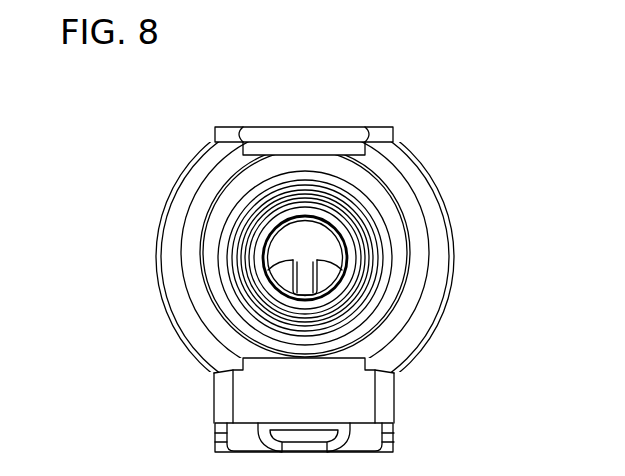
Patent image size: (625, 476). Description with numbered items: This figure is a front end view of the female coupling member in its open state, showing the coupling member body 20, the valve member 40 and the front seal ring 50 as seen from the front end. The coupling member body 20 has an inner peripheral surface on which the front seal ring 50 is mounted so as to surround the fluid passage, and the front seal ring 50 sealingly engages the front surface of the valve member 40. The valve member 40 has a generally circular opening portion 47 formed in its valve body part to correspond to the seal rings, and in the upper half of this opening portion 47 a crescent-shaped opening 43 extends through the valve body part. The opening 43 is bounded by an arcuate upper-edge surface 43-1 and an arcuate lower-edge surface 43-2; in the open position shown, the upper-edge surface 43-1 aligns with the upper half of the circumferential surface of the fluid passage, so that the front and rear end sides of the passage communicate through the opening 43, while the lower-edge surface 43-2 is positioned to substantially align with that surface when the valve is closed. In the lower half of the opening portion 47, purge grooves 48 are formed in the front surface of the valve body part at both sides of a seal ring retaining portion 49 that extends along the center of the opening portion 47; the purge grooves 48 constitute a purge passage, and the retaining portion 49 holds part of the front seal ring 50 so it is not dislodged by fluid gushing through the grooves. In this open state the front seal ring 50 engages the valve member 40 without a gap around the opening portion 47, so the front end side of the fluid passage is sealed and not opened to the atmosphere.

The coupling member body 20 is at (179, 178).
The valve member 40 is at (250, 134).
The opening 43 is at (325, 235).
The arcuate upper-edge surface 43-1 is at (316, 216).
The arcuate lower-edge surface 43-2 is at (283, 262).
The opening portion 47 is at (352, 271).
The purge grooves 48 is at (280, 278).
The seal ring retaining portion 49 is at (305, 282).
The front seal ring 50 is at (352, 242).